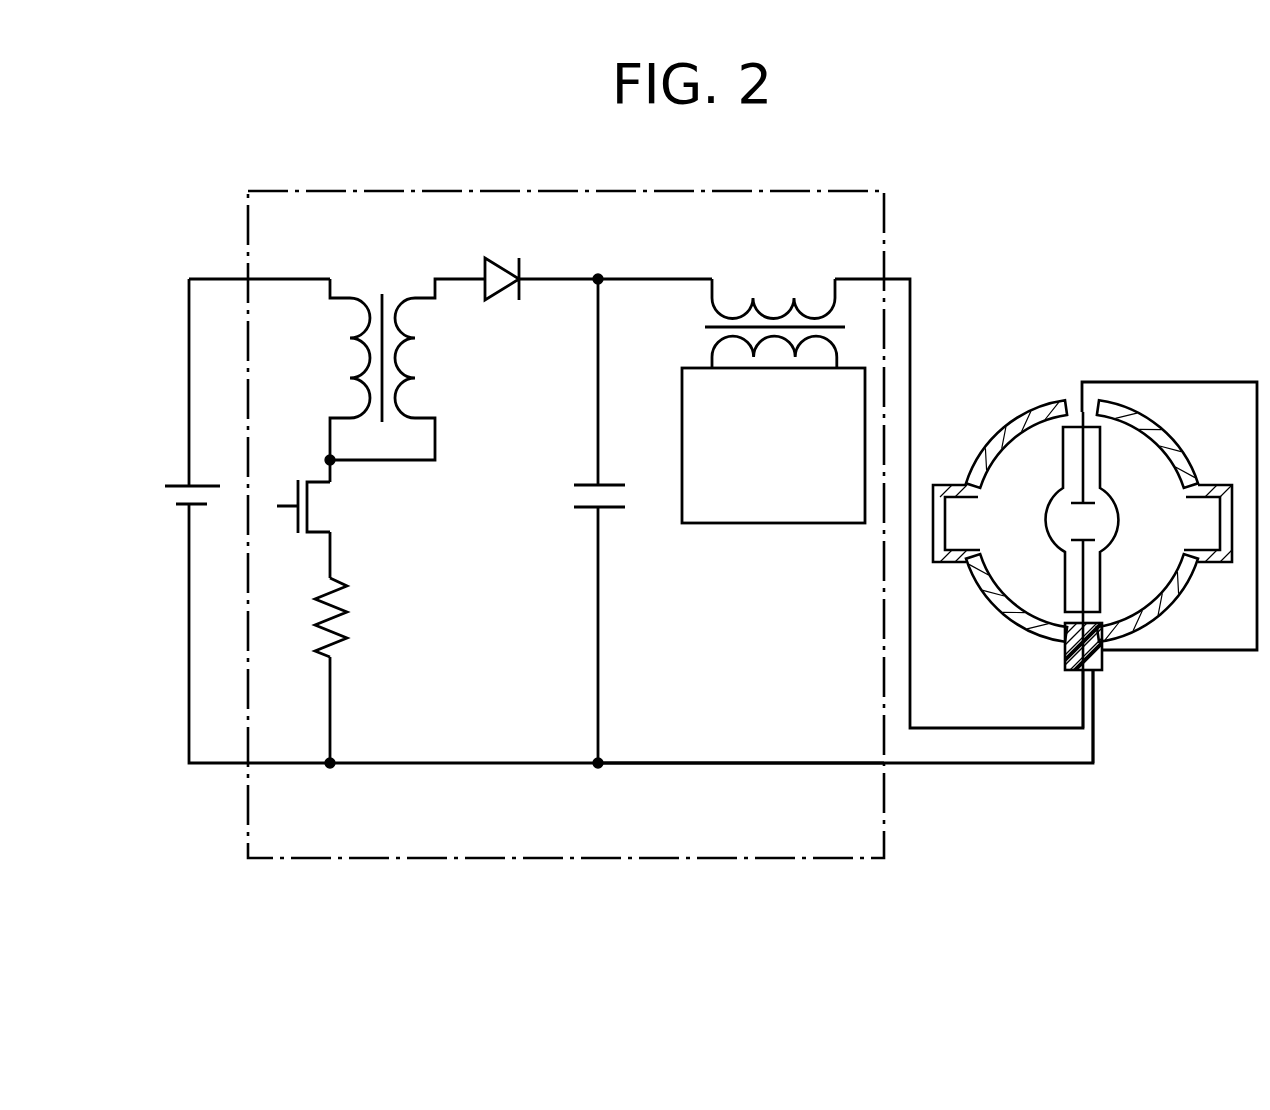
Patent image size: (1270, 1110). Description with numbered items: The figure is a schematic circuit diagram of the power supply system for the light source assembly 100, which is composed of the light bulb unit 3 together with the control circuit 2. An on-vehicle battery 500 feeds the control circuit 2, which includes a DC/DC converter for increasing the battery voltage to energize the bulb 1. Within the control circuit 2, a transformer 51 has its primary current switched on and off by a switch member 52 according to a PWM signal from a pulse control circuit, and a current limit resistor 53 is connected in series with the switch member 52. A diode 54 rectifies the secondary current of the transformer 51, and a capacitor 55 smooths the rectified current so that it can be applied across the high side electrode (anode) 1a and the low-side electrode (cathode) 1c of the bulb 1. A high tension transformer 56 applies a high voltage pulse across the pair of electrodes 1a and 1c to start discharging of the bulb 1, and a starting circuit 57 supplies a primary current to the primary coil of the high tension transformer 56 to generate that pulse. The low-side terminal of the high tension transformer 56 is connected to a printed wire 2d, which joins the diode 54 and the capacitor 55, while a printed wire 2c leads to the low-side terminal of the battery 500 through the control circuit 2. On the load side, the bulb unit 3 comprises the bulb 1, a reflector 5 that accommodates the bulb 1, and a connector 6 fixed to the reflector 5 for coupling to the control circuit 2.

The bulb 1 is at (1060, 450).
The high side electrode (anode) 1a is at (1067, 632).
The low-side electrode (cathode) 1c is at (1090, 413).
The control circuit 2 is at (884, 247).
The printed wire 2c is at (657, 765).
The printed wire 2d is at (645, 277).
The light bulb unit 3 is at (1139, 367).
The reflector 5 is at (1062, 397).
The connector 6 is at (1065, 660).
The transformer 51 is at (382, 288).
The switch member 52 is at (318, 506).
The current limit resistor 53 is at (343, 612).
The diode 54 is at (498, 300).
The capacitor 55 is at (592, 485).
The high tension transformer 56 is at (705, 327).
The starting circuit 57 is at (682, 388).
The light source assembly 100 is at (1108, 239).
The on-vehicle battery 500 is at (172, 482).